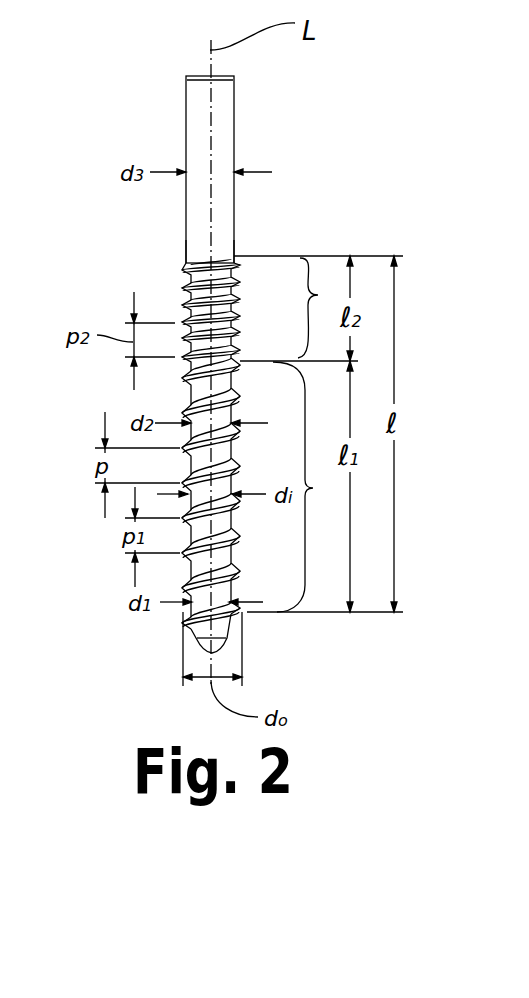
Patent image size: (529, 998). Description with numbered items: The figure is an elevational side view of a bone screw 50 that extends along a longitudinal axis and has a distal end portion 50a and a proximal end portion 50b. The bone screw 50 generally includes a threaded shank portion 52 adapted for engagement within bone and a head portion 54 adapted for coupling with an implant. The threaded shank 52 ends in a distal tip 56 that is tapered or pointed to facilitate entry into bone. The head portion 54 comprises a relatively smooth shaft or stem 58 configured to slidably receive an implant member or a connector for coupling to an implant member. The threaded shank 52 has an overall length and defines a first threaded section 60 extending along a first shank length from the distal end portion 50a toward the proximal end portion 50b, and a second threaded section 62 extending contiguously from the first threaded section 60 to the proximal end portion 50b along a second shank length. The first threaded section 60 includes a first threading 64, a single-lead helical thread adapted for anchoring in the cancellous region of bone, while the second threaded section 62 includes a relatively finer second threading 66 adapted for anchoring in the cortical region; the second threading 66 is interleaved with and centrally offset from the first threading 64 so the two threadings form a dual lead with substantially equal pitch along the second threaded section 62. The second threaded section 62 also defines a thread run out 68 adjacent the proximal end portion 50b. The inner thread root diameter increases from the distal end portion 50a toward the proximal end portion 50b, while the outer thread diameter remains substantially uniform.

The bone screw 50 is at (378, 173).
The distal end portion 50a is at (170, 638).
The proximal end portion 50b is at (113, 285).
The threaded shank portion 52 is at (153, 398).
The head portion 54 is at (165, 113).
The distal tip 56 is at (227, 650).
The shaft or stem 58 is at (235, 142).
The first threaded section 60 is at (222, 422).
The second threaded section 62 is at (263, 299).
The first threading 64 is at (180, 340).
The second threading 66 is at (238, 357).
The thread run out 68 is at (212, 262).